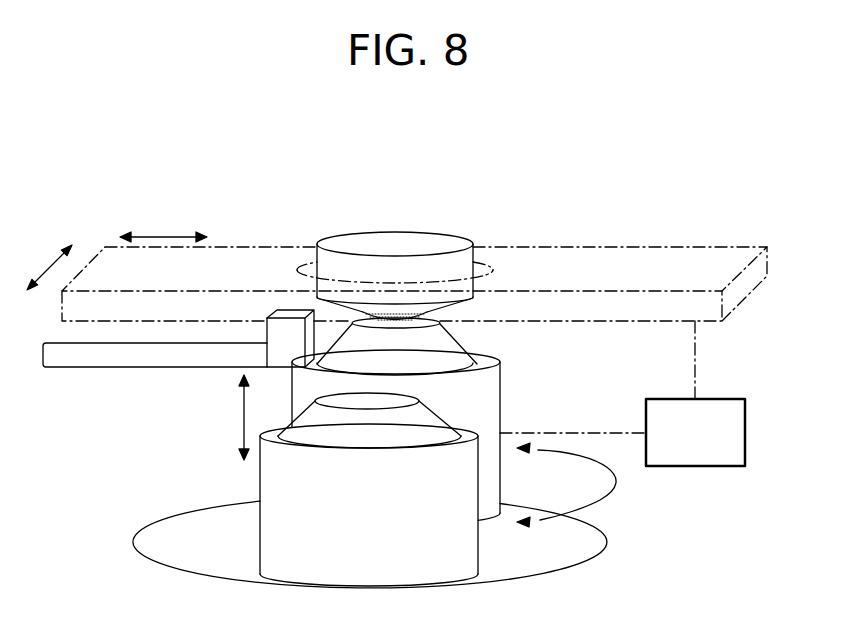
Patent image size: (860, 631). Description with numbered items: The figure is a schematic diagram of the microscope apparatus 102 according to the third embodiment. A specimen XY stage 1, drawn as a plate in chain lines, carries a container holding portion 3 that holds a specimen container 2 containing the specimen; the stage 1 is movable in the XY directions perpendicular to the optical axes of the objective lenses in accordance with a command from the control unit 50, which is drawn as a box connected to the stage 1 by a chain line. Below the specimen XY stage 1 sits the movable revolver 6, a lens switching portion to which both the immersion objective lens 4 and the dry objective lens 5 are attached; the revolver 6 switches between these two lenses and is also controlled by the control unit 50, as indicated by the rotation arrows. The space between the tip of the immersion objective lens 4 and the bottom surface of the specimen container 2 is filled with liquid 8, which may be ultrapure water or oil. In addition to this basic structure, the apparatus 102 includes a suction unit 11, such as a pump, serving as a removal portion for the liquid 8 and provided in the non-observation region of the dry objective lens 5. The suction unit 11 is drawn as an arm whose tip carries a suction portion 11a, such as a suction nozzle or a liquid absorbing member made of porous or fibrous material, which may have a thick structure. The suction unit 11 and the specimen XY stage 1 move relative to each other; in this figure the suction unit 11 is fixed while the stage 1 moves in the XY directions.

The specimen XY stage 1 is at (678, 258).
The specimen container 2 is at (463, 240).
The container holding portion 3 is at (313, 267).
The immersion objective lens 4 is at (502, 400).
The dry objective lens 5 is at (478, 546).
The movable revolver 6 is at (140, 525).
The liquid 8 is at (437, 314).
The suction unit 11 is at (168, 368).
The suction portion 11a is at (287, 313).
The control unit 50 is at (698, 468).
The microscope apparatus 102 is at (762, 172).